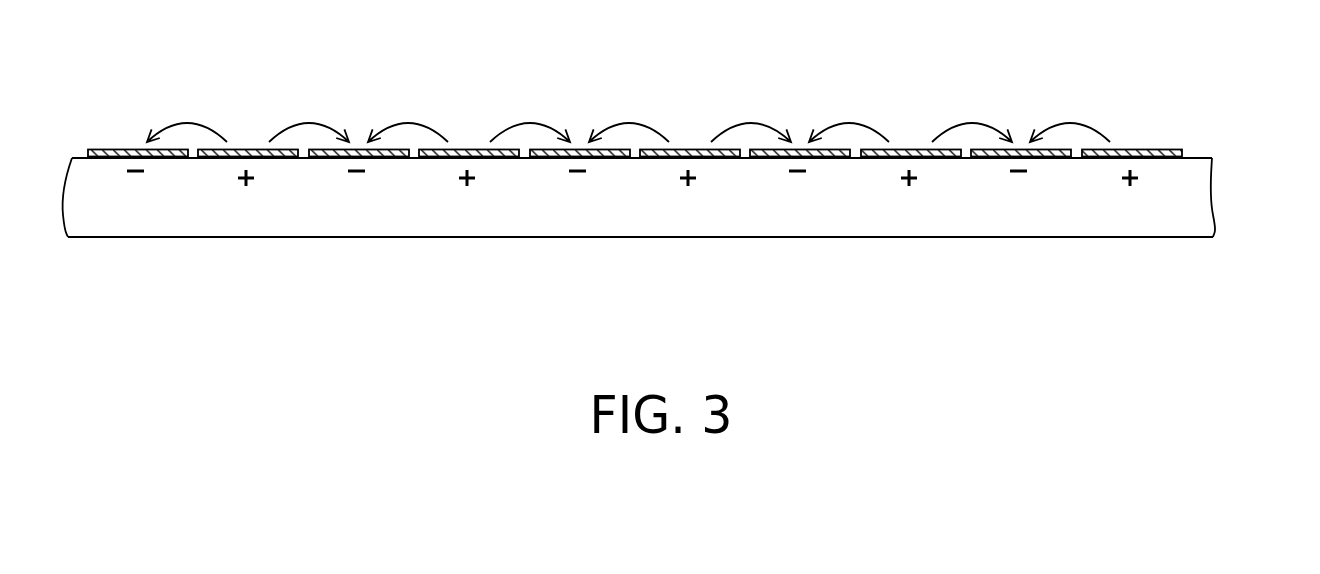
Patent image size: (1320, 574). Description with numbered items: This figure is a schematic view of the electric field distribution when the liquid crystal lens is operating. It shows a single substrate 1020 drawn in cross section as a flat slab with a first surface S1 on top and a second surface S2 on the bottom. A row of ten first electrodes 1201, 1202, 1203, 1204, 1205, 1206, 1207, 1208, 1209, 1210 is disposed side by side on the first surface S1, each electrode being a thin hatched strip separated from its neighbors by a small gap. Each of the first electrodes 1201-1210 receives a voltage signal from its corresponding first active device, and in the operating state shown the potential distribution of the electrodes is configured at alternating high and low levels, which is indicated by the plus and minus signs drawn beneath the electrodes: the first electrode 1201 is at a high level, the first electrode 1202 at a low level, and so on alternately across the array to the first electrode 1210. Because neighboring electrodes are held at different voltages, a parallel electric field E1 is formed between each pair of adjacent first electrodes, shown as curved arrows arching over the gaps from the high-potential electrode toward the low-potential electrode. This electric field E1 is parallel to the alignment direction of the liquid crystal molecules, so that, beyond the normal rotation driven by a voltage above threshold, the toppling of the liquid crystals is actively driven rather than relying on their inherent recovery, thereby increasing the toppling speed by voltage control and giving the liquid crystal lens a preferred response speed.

The second substrate 1020 is at (1198, 200).
The first surface S1 is at (1207, 146).
The second surface S2 is at (1162, 250).
The first electrode 1201 is at (1088, 158).
The first electrode 1202 is at (992, 158).
The first electrode 1203 is at (875, 158).
The first electrode 1204 is at (765, 158).
The first electrode 1205 is at (657, 158).
The first electrode 1206 is at (547, 158).
The first electrode 1207 is at (432, 158).
The first electrode 1208 is at (323, 158).
The first electrode 1209 is at (222, 158).
The first electrode 1210 is at (107, 158).
The parallel electric field E1 is at (628, 112).